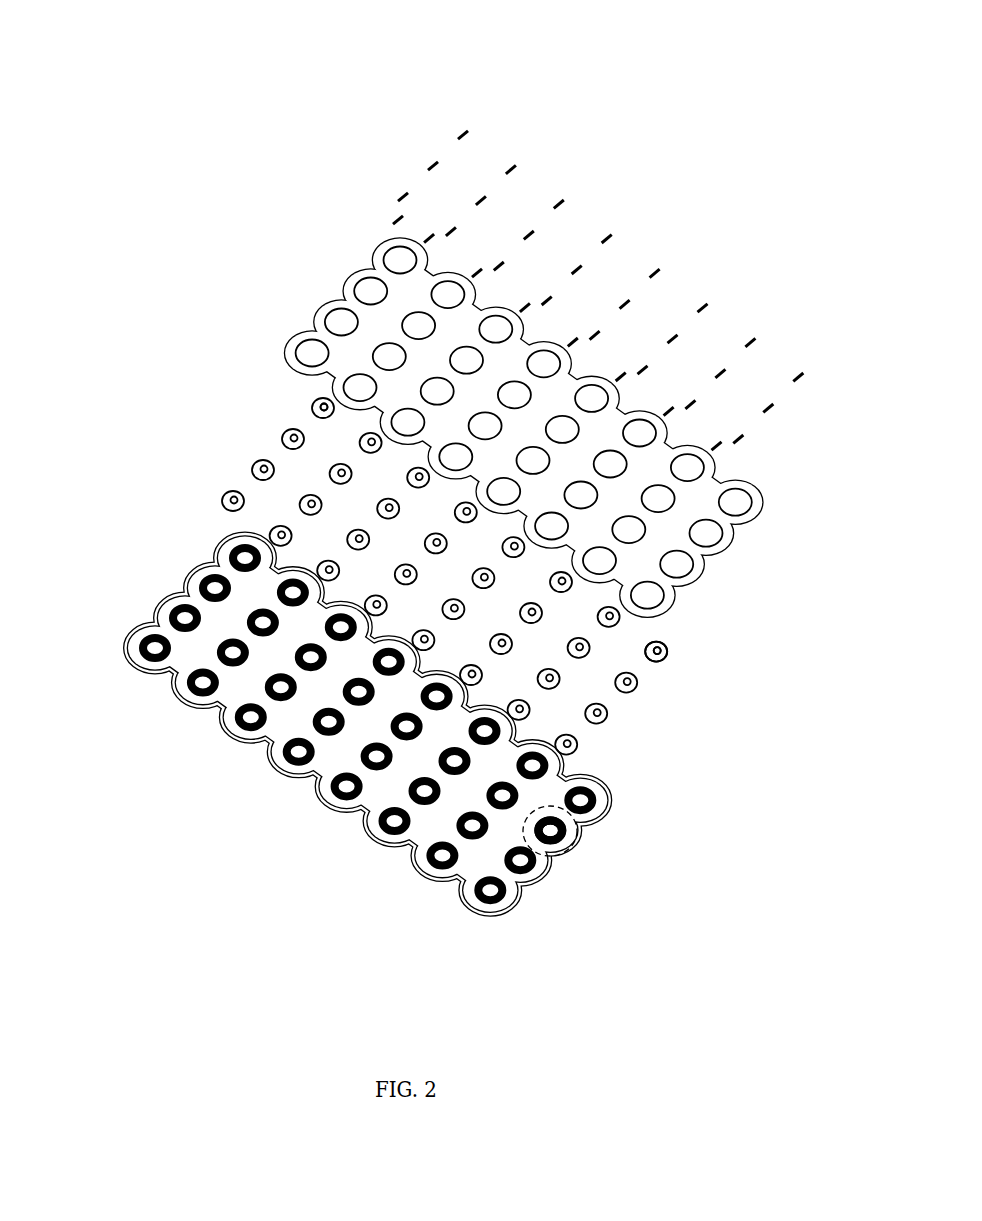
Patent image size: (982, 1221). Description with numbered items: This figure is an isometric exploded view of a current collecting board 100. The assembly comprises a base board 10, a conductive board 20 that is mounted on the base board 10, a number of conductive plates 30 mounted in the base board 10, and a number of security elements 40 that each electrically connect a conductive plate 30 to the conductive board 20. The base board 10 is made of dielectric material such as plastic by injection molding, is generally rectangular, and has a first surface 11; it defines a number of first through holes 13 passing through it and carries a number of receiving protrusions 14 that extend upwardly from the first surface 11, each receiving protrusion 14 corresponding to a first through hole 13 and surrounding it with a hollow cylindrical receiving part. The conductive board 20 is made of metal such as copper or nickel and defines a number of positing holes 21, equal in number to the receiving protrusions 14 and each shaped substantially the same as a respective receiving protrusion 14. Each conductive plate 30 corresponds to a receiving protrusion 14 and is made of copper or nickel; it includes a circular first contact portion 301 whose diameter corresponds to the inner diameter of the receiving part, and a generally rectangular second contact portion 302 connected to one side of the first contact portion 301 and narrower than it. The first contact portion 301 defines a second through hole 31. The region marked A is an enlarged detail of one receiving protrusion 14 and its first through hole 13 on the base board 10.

The current collecting board 100 is at (465, 48).
The base board 10 is at (270, 777).
The first surface 11 is at (427, 822).
The first through hole 13 is at (568, 828).
The receiving protrusion 14 is at (550, 832).
The enlarged portion A is at (548, 807).
The conductive board 20 is at (352, 350).
The positing hole 21 is at (400, 262).
The conductive plate 30 is at (312, 408).
The second through hole 31 is at (313, 403).
The first contact portion 301 is at (666, 646).
The second contact portion 302 is at (652, 663).
The security element 40 is at (513, 170).